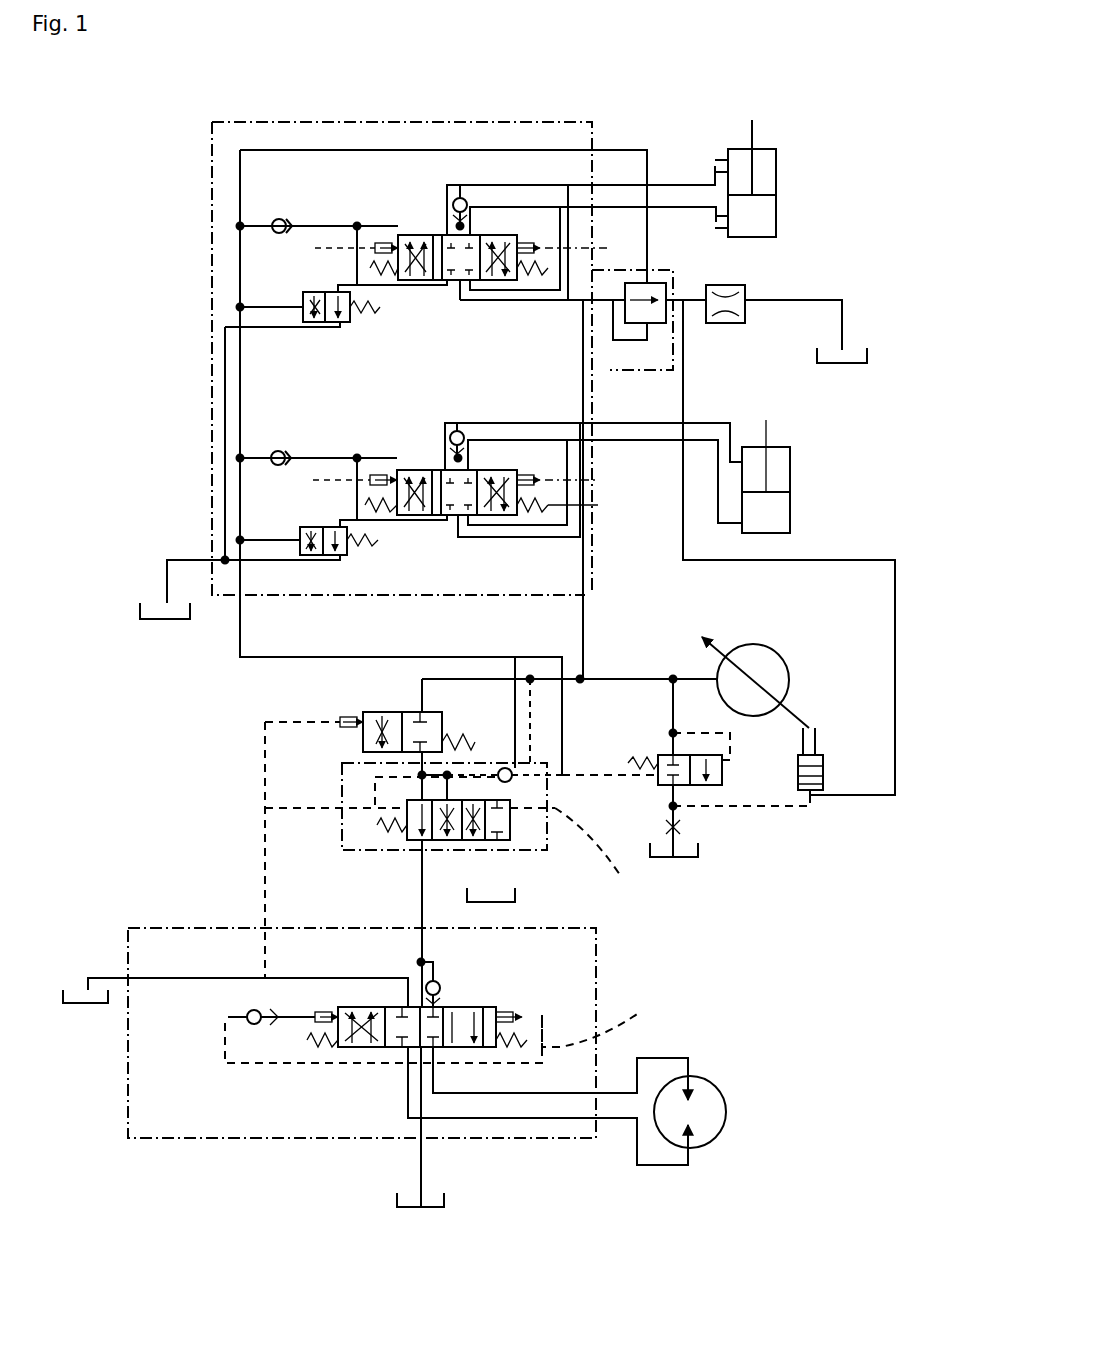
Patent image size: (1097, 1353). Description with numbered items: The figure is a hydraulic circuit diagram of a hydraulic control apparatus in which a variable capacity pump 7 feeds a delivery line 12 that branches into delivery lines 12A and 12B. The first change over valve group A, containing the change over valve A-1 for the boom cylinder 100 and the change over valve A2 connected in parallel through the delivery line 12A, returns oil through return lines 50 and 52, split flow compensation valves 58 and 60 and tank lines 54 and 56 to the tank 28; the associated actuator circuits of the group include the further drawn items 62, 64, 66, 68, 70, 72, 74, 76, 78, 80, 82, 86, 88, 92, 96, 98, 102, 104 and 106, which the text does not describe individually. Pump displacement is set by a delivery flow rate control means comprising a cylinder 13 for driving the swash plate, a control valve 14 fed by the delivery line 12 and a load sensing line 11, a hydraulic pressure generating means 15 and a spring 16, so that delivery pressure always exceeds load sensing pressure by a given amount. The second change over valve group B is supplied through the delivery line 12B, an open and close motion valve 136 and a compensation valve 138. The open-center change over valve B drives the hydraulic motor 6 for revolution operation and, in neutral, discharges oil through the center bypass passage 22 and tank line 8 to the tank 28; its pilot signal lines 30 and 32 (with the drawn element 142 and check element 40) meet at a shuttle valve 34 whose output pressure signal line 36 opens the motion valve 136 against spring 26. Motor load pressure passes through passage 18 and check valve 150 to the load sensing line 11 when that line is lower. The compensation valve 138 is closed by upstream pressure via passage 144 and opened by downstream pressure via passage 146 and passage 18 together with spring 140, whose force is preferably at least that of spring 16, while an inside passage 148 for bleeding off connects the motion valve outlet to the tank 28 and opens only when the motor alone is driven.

The first change over valve group A is at (212, 155).
The change over valve A2 is at (415, 233).
The change over valve A-1 is at (412, 468).
The change over valve B is at (160, 928).
The hydraulic motor 6 is at (728, 1113).
The variable capacity pump 7 is at (755, 650).
The tank line 8 is at (425, 1168).
The load sensing line 11 is at (240, 505).
The delivery line 12 is at (610, 679).
The delivery line 12A is at (583, 614).
The delivery line 12B is at (452, 679).
The cylinder 13 is at (825, 777).
The control valve 14 is at (730, 772).
The hydraulic pressure generating means 15 is at (682, 827).
The spring 16 is at (640, 760).
The passage 18 is at (478, 760).
The line 22 is at (418, 893).
The spring 26 is at (445, 740).
The tank 28 is at (165, 625).
The hydraulic pressure signal line 30 is at (608, 1021).
The hydraulic pressure signal line 32 is at (300, 1002).
The shuttle valve 34 is at (250, 1026).
The pressure signal line 36 is at (260, 920).
The check valve 40 is at (440, 980).
The return line 50 is at (410, 518).
The return line 52 is at (415, 282).
The tank line 54 is at (265, 562).
The tank line 56 is at (225, 400).
The split flow compensation valve 58 is at (305, 527).
The split flow compensation valve 60 is at (300, 293).
The counterbalance valve 62 is at (500, 233).
The check valve 64 is at (460, 197).
The actuator line 66 is at (562, 292).
The actuator line 68 is at (568, 210).
The cylinder line 70 is at (705, 212).
The hydraulic cylinder 72 is at (778, 215).
The cylinder line 74 is at (672, 185).
The pilot line 76 is at (502, 282).
The supply line 78 is at (320, 226).
The branch line 80 is at (357, 262).
The check valve 82 is at (278, 219).
The relief line 86 is at (262, 300).
The pilot control block 88 is at (673, 270).
The pilot operated check valve 92 is at (645, 260).
The orifice 96 is at (745, 295).
The drain line 98 is at (683, 378).
The boom cylinder 100 is at (790, 518).
The check valve 102 is at (437, 468).
The check valve 104 is at (278, 451).
The counterbalance valve 106 is at (500, 468).
The open and close motion valve 136 is at (367, 713).
The compensation valve 138 is at (348, 790).
The spring 140 is at (407, 825).
The pilot port 142 is at (462, 1007).
The passage 144 is at (607, 854).
The passage 146 is at (375, 806).
The passage for bleeding off 148 is at (470, 842).
The check valve 150 is at (512, 765).